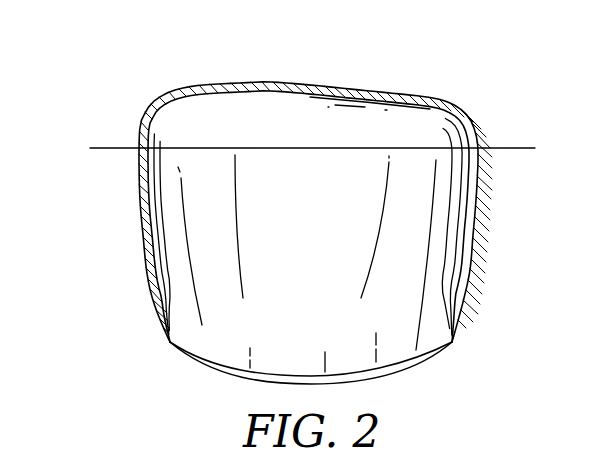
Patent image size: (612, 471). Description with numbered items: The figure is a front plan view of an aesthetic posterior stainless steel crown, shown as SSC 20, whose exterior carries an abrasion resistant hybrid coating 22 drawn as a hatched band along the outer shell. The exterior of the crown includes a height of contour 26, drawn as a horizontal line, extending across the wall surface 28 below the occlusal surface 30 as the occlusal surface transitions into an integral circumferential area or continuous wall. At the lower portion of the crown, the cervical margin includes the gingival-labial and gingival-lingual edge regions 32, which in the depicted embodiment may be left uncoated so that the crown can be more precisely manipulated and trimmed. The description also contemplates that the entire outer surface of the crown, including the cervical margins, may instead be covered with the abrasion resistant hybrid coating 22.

The aesthetic posterior SSC 20 is at (122, 74).
The abrasion resistant hybrid coating 22 is at (440, 96).
The height of contour 26 is at (328, 150).
The wall surface 28 is at (205, 243).
The occlusal surface 30 is at (296, 78).
The gingival-labial and gingival-lingual edge regions 32 is at (170, 342).